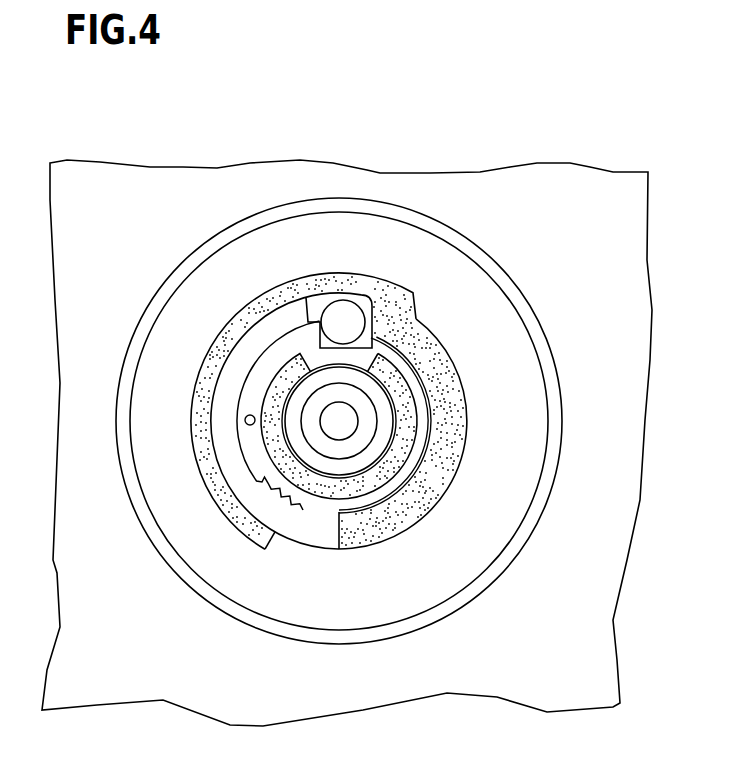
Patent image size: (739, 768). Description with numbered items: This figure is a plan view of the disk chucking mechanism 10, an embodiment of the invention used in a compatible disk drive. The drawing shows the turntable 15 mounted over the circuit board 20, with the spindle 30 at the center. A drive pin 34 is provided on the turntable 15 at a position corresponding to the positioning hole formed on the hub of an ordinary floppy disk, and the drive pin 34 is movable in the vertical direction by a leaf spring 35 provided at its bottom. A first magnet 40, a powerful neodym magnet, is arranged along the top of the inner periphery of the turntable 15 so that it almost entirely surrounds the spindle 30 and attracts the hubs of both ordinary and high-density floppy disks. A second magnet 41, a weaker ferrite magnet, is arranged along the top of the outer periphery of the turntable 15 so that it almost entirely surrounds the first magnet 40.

The disk chucking mechanism 10 is at (416, 95).
The turntable 15 is at (427, 260).
The circuit board 20 is at (620, 306).
The spindle 30 is at (348, 426).
The drive pin 34 is at (343, 316).
The leaf spring 35 is at (266, 364).
The first magnet 40 is at (398, 400).
The second magnet 41 is at (415, 497).